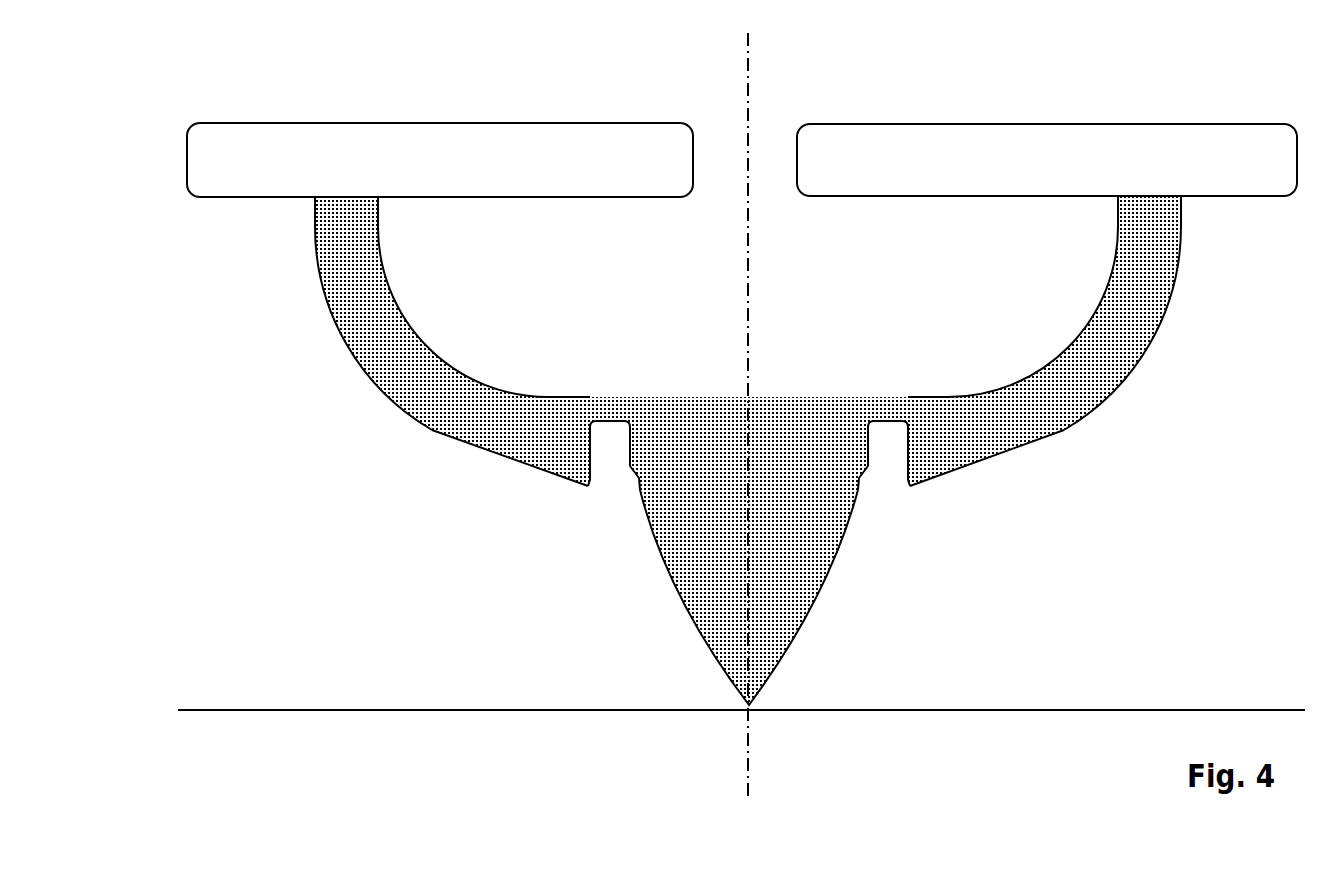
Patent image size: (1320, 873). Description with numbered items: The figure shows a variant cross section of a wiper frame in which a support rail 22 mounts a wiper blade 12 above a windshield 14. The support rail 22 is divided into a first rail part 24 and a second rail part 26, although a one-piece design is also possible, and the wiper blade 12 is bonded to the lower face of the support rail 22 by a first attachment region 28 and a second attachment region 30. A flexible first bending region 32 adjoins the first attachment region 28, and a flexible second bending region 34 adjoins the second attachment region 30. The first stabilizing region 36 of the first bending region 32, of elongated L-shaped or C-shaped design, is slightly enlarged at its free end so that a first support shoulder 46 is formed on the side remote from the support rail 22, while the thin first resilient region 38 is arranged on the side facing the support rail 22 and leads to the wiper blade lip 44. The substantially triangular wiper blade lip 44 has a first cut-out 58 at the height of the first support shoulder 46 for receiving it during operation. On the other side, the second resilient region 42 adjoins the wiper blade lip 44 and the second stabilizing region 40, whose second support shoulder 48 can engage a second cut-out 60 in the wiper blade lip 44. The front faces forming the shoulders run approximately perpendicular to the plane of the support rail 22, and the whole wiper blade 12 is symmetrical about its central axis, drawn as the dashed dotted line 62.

The wiper blade 12 is at (182, 520).
The windshield 14 is at (348, 711).
The support rail 22 is at (248, 85).
The first rail part 24 is at (460, 177).
The second rail part 26 is at (1064, 177).
The first attachment region 28 is at (386, 211).
The second attachment region 30 is at (1103, 212).
The first bending region 32 is at (531, 328).
The second bending region 34 is at (985, 307).
The first stabilizing region 36 is at (430, 398).
The first resilient region 38 is at (612, 415).
The second stabilizing region 40 is at (1082, 392).
The second resilient region 42 is at (886, 415).
The wiper blade lip 44 is at (723, 582).
The first support shoulder 46 is at (587, 483).
The second support shoulder 48 is at (912, 486).
The first cut-out 58 is at (637, 492).
The second cut-out 60 is at (863, 490).
The dashed dotted line 62 is at (749, 60).